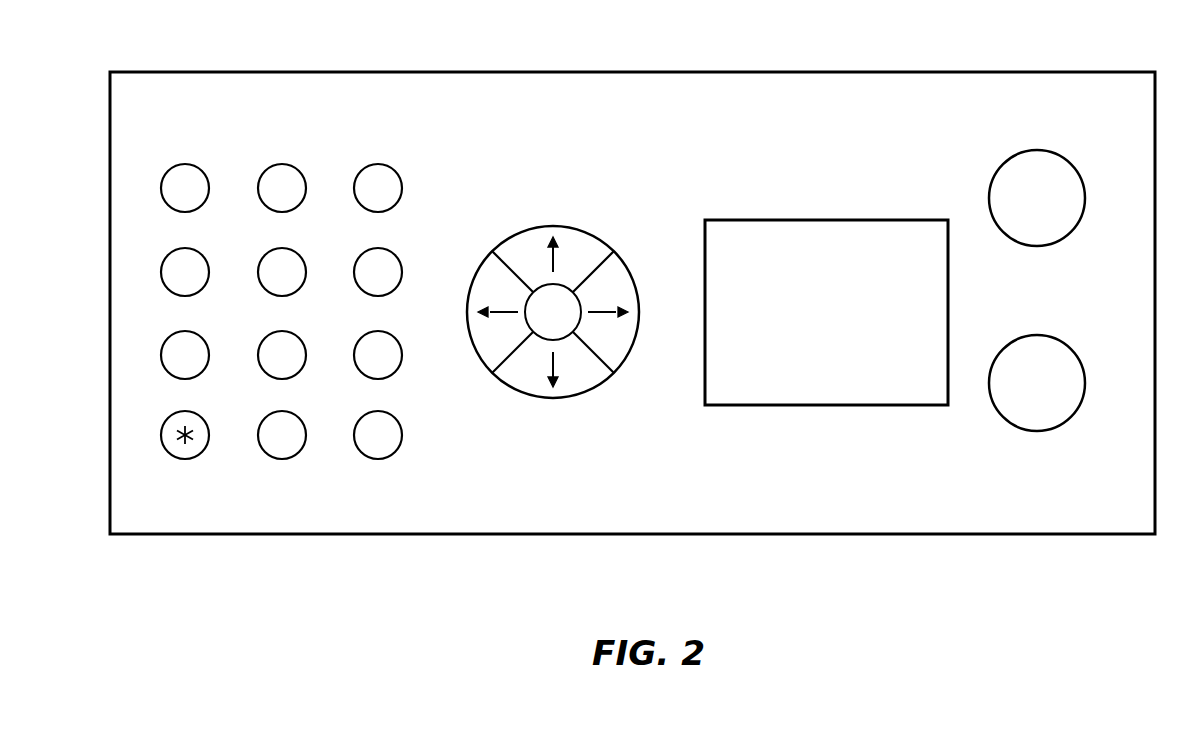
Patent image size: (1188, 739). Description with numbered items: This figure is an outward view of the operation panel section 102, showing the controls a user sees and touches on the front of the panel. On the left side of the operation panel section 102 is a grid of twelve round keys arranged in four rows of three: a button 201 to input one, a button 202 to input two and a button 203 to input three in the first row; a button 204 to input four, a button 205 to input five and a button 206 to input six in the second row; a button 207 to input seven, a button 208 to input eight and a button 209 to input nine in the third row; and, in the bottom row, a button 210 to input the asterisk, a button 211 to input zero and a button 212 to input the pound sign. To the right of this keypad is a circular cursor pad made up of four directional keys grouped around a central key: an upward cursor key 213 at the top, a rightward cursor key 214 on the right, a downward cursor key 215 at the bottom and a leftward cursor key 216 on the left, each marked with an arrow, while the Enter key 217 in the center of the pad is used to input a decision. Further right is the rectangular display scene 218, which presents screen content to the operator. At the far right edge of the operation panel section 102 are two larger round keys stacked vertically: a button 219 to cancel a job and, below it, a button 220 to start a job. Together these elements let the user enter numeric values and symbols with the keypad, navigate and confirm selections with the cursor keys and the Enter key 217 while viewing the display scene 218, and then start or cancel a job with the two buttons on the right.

The operation panel section 102 is at (794, 71).
The button 201 is at (200, 171).
The button 202 is at (297, 171).
The button 203 is at (393, 171).
The button 204 is at (200, 254).
The button 205 is at (297, 254).
The button 206 is at (393, 254).
The button 207 is at (200, 336).
The button 208 is at (297, 336).
The button 209 is at (393, 336).
The button 210 is at (202, 452).
The button 211 is at (299, 452).
The button 212 is at (395, 452).
The upward cursor key 213 is at (552, 224).
The rightward cursor key 214 is at (632, 278).
The downward cursor key 215 is at (556, 398).
The leftward cursor key 216 is at (476, 354).
The Enter key 217 is at (582, 323).
The display scene 218 is at (888, 220).
The button 219 is at (1062, 153).
The button 220 is at (1062, 341).